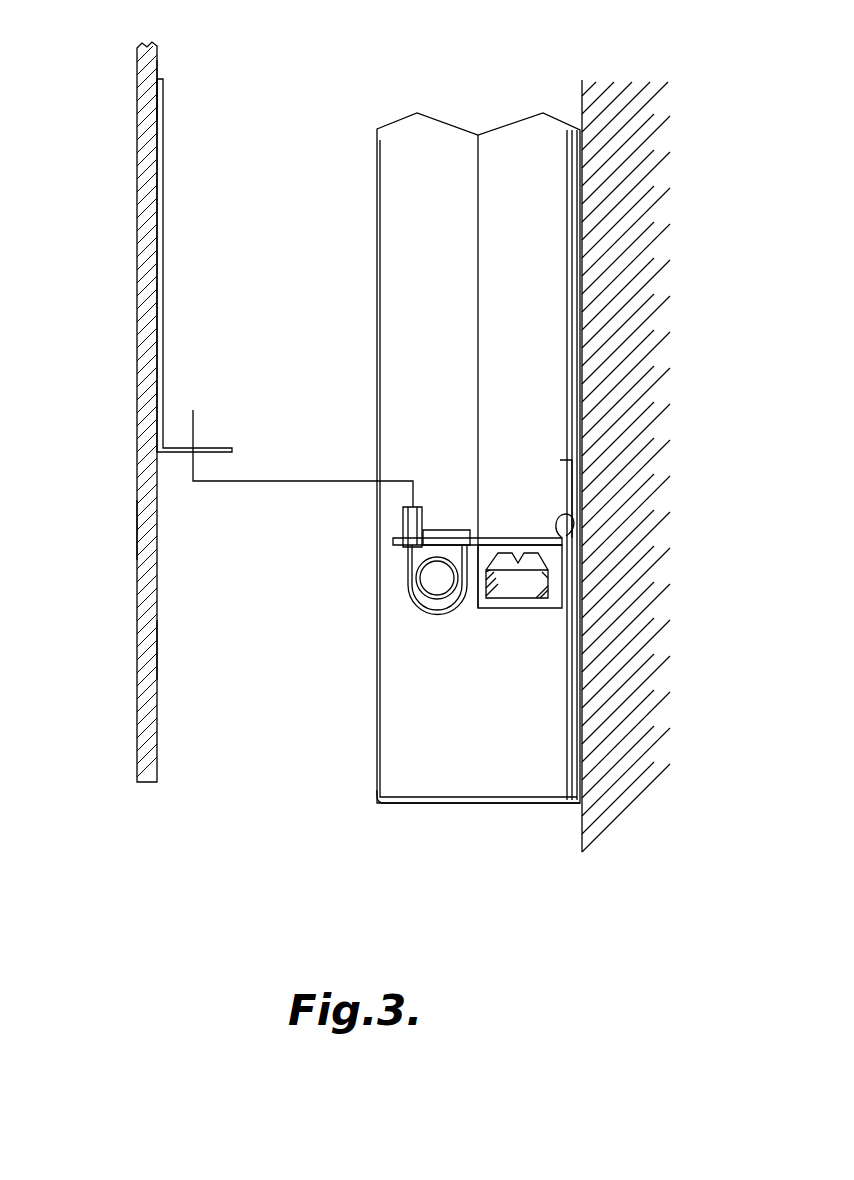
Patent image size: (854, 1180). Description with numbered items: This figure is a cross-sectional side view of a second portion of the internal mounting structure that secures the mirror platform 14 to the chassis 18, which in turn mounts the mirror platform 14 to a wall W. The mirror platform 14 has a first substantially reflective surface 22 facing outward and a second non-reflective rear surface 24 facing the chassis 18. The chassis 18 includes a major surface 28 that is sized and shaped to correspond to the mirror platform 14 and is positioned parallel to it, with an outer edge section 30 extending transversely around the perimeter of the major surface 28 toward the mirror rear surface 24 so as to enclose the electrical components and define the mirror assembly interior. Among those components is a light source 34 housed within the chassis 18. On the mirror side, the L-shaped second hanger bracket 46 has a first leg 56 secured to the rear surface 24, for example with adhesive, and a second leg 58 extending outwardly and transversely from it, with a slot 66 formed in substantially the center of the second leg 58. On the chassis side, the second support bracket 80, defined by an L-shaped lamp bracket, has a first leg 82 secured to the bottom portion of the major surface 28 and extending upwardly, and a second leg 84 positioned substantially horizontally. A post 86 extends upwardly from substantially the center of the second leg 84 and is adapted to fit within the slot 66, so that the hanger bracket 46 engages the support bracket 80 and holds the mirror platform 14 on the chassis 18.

The mirror platform 14 is at (125, 782).
The first substantially reflective surface 22 is at (140, 540).
The rear surface 24 is at (158, 650).
The second hanger bracket 46 is at (178, 98).
The first leg 56 is at (163, 216).
The slot 66 is at (196, 448).
The second leg 58 is at (232, 450).
The chassis 18 is at (541, 816).
The major surface 28 is at (575, 245).
The outer edge section 30 is at (470, 805).
The second support bracket 80 is at (497, 518).
The post 86 is at (408, 512).
The light source 34 is at (446, 620).
The second leg 84 is at (568, 530).
The first leg 82 is at (574, 487).
The wall W is at (646, 112).